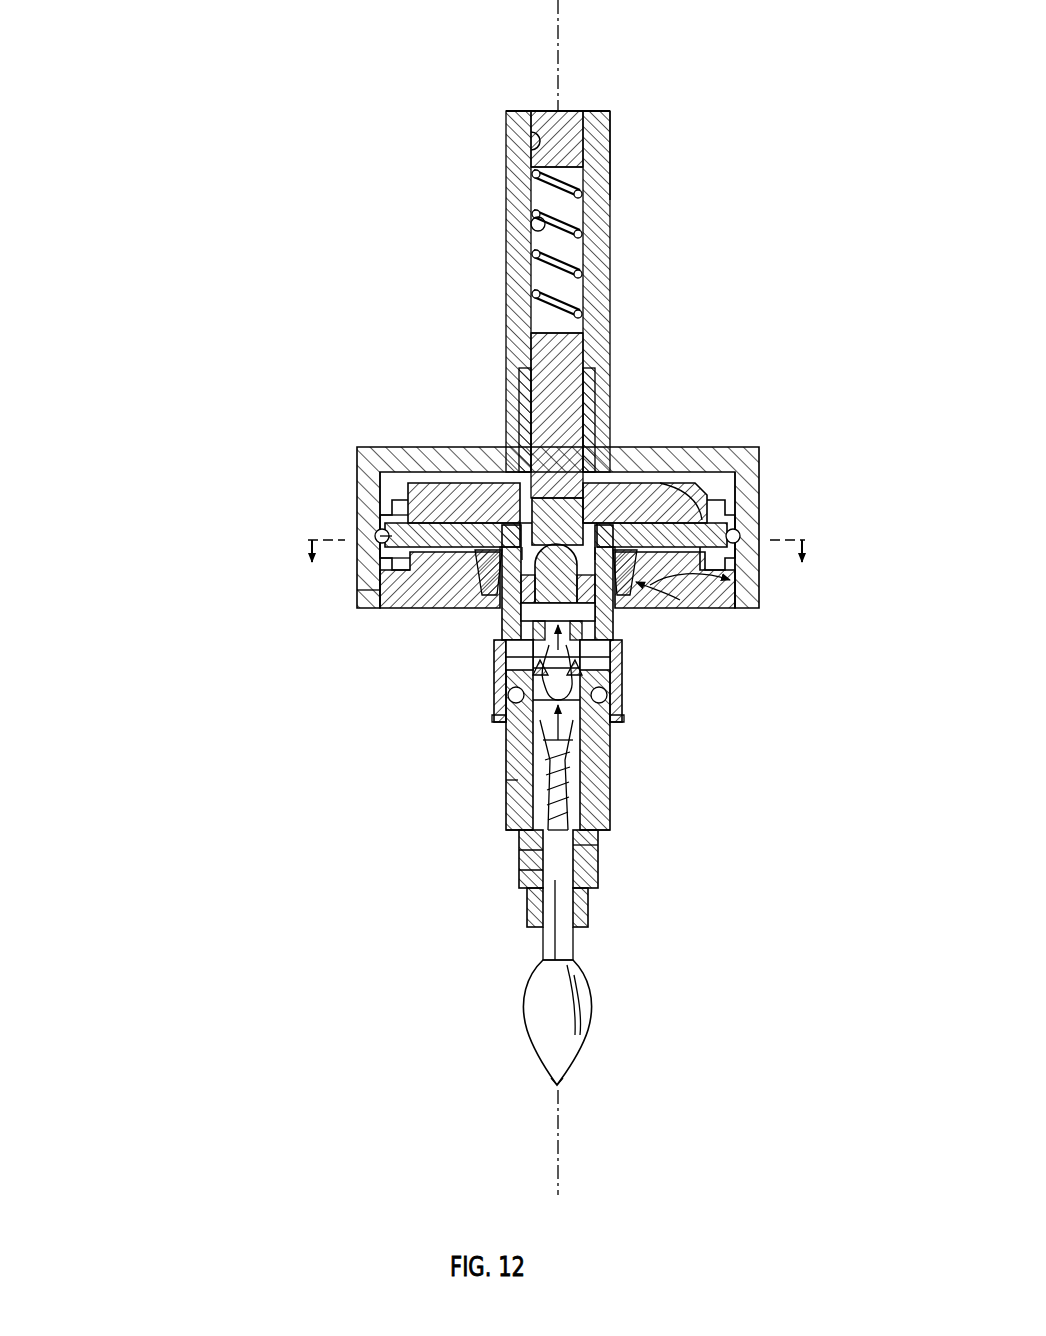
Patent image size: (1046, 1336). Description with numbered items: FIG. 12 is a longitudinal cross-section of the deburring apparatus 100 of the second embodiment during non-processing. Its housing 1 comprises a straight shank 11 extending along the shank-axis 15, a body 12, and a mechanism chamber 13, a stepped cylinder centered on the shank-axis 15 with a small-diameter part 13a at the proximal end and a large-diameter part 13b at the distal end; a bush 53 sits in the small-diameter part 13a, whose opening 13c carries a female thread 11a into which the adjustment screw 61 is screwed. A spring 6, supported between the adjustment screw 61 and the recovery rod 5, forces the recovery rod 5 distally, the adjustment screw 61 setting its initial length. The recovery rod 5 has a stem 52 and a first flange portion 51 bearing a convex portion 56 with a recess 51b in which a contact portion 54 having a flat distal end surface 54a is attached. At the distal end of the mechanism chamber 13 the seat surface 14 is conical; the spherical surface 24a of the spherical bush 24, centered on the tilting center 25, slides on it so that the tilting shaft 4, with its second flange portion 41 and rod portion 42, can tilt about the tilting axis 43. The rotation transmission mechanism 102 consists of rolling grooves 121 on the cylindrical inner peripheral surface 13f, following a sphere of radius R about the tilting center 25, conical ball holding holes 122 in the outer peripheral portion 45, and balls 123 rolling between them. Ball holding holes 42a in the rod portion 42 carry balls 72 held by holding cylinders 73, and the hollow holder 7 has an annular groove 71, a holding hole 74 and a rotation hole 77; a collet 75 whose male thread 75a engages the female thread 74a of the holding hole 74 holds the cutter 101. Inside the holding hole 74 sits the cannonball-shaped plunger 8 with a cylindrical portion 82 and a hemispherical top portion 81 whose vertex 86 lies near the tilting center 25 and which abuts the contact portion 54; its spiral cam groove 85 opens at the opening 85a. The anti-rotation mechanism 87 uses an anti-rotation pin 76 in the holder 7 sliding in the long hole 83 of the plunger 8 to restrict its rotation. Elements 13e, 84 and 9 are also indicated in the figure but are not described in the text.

The deburring apparatus 100 is at (466, 90).
The shank-axis 15 is at (558, 67).
The adjustment screw 61 is at (545, 118).
The opening 13c is at (583, 112).
The female thread 11a is at (540, 142).
The housing 1 is at (613, 170).
The shank 11 is at (512, 200).
The spring 6 is at (590, 245).
The small-diameter part 13a is at (532, 226).
The mechanism chamber 13 is at (735, 608).
The recovery rod 5 is at (440, 396).
The stem 52 is at (545, 355).
The recess 51b is at (532, 400).
The convex portion 56 is at (518, 450).
The first flange portion 51 is at (505, 500).
The bush 53 is at (595, 372).
The contact portion 54 is at (594, 402).
The cylindrical inner peripheral surface 13f is at (378, 472).
The distal end surface 54a is at (480, 498).
The vertex 86 is at (522, 520).
The tilting center 25 is at (618, 482).
The large-diameter part 13b is at (718, 472).
The body 12 is at (760, 455).
The outer peripheral portion 45 is at (380, 530).
The second flange portion 41 is at (740, 505).
The tilting shaft 4 is at (502, 550).
The ball holding hole 122 is at (385, 528).
The ball 123 is at (385, 538).
The rolling groove 121 is at (385, 592).
The rotation transmission mechanism 102 is at (279, 538).
The housing lower wall 13e is at (362, 600).
The radius R is at (758, 590).
The seat surface 14 is at (500, 622).
The spherical bush 24 is at (645, 606).
The spherical surface 24a is at (630, 610).
The anti-rotation pin 76 is at (505, 655).
The holding cylinder 73 is at (506, 690).
The holder 7 is at (478, 717).
The holding hole 74 is at (500, 700).
The rotation hole 77 is at (503, 725).
The long hole 83 is at (616, 696).
The valve seat 84 is at (609, 710).
The ball 72 is at (518, 758).
The ball holding hole 42a is at (515, 786).
The top portion 81 is at (640, 612).
The annular groove 71 is at (510, 815).
The opening 85a is at (605, 765).
The cam groove 85 is at (604, 800).
The plunger 8 is at (678, 765).
The male thread 75a is at (521, 840).
The rod portion 42 is at (604, 826).
The anti-rotation mechanism 87 is at (548, 850).
The cylindrical portion 82 is at (603, 858).
The female thread 74a is at (596, 890).
The collet 75 is at (588, 928).
The liquid droplet 9 is at (530, 960).
The cutter 101 is at (590, 1022).
The tilting axis 43 is at (558, 1128).